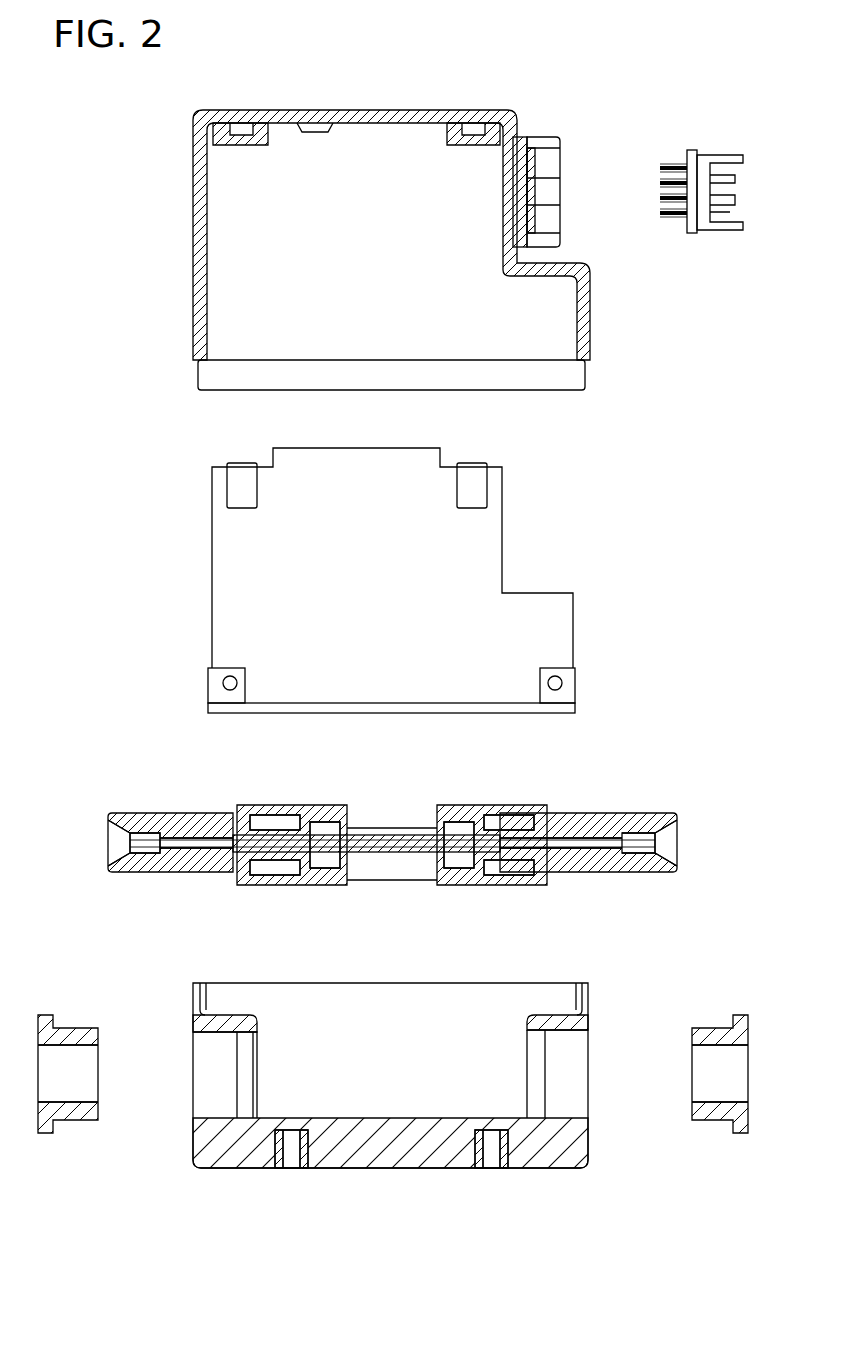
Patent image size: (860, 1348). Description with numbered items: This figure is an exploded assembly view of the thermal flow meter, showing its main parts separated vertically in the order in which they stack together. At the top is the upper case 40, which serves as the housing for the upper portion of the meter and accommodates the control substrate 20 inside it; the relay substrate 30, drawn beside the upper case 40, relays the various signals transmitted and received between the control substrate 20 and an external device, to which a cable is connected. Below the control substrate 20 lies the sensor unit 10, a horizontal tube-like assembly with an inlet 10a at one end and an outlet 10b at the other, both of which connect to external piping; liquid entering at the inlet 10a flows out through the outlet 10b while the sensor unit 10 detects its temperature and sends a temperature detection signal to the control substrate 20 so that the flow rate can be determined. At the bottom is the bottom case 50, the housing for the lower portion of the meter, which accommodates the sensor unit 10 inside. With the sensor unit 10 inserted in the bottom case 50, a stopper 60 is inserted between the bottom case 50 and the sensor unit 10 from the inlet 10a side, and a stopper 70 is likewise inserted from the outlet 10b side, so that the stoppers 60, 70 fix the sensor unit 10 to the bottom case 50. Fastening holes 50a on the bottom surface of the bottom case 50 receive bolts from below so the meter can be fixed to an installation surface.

The sensor unit 10 is at (391, 819).
The inlet 10a is at (118, 841).
The outlet 10b is at (670, 840).
The control substrate 20 is at (582, 630).
The relay substrate 30 is at (715, 240).
The upper case 40 is at (350, 108).
The bottom case 50 is at (426, 1100).
The fastening holes 50a is at (291, 1160).
The stopper 60 is at (73, 1025).
The stopper 70 is at (708, 1025).